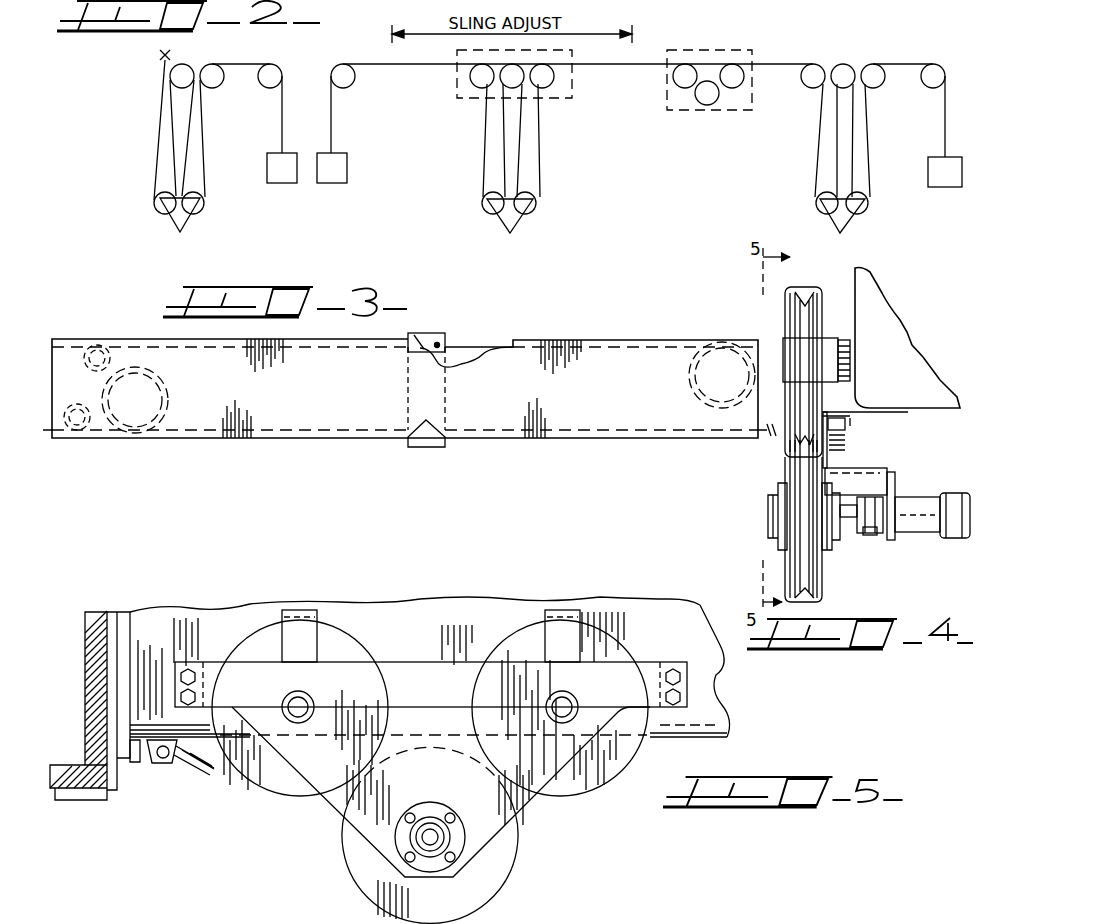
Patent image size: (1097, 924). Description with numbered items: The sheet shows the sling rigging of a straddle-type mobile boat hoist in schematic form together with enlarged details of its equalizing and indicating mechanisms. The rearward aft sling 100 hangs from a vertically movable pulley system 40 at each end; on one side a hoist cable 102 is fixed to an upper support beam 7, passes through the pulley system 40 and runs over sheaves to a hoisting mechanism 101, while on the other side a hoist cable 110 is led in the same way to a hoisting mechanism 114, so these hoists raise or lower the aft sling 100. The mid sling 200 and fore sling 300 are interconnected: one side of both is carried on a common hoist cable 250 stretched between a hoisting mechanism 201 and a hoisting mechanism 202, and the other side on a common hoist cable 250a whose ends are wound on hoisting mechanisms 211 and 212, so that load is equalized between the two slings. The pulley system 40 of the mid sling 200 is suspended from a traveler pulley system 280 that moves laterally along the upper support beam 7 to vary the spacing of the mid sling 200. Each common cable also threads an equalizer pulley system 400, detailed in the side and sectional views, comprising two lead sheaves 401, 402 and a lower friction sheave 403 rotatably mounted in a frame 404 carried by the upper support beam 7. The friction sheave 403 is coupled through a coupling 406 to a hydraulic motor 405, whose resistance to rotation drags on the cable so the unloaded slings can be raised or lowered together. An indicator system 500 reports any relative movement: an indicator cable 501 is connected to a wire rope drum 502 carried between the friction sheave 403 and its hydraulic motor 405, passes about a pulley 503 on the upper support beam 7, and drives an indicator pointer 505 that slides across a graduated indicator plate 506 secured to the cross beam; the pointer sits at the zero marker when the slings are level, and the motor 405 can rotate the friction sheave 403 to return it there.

In FIG. 2, the vertically movable pulley system 40 is at (147, 201).
In FIG. 2, the aft sling 100 is at (173, 227).
In FIG. 2, the hoist cable 102 is at (235, 114).
In FIG. 2, the hoist cable 110 is at (233, 64).
In FIG. 2, the hoisting mechanism 101 is at (279, 166).
In FIG. 2, the hoisting mechanism 114 is at (282, 183).
In FIG. 2, the hoisting mechanism 201 is at (341, 163).
In FIG. 2, the hoisting mechanism 211 is at (332, 183).
In FIG. 2, the traveler pulley system 280 is at (485, 104).
In FIG. 2, the mid sling 200 is at (513, 228).
In FIG. 2, the hoist cable 250 is at (618, 113).
In FIG. 2, the hoist cable 250a is at (605, 65).
In FIG. 2, the equalizer pulley system 400 is at (757, 115).
In FIG. 2, the fore sling 300 is at (820, 220).
In FIG. 2, the hoisting mechanism 202 is at (940, 165).
In FIG. 2, the hoisting mechanism 212 is at (945, 187).
In FIG. 3, the indicator system 500 is at (322, 449).
In FIG. 3, the indicator cable 501 is at (462, 345).
In FIG. 5, the indicator cable 501 is at (223, 773).
In FIG. 3, the indicator pointer 505 is at (427, 448).
In FIG. 3, the indicator plate 506 is at (540, 358).
In FIG. 4, the lead sheave 402 is at (805, 300).
In FIG. 5, the lead sheave 402 is at (587, 630).
In FIG. 4, the upper support beam 7 is at (897, 338).
In FIG. 5, the upper support beam 7 is at (650, 617).
In FIG. 4, the frame 404 is at (846, 451).
In FIG. 5, the frame 404 is at (425, 678).
In FIG. 4, the hydraulic motor 405 is at (913, 496).
In FIG. 4, the wire rope drum 502 is at (850, 524).
In FIG. 5, the wire rope drum 502 is at (380, 847).
In FIG. 4, the coupling 406 is at (868, 533).
In FIG. 4, the friction sheave 403 is at (815, 568).
In FIG. 5, the friction sheave 403 is at (490, 870).
In FIG. 5, the lead sheave 401 is at (328, 630).
In FIG. 5, the pulley 503 is at (197, 770).